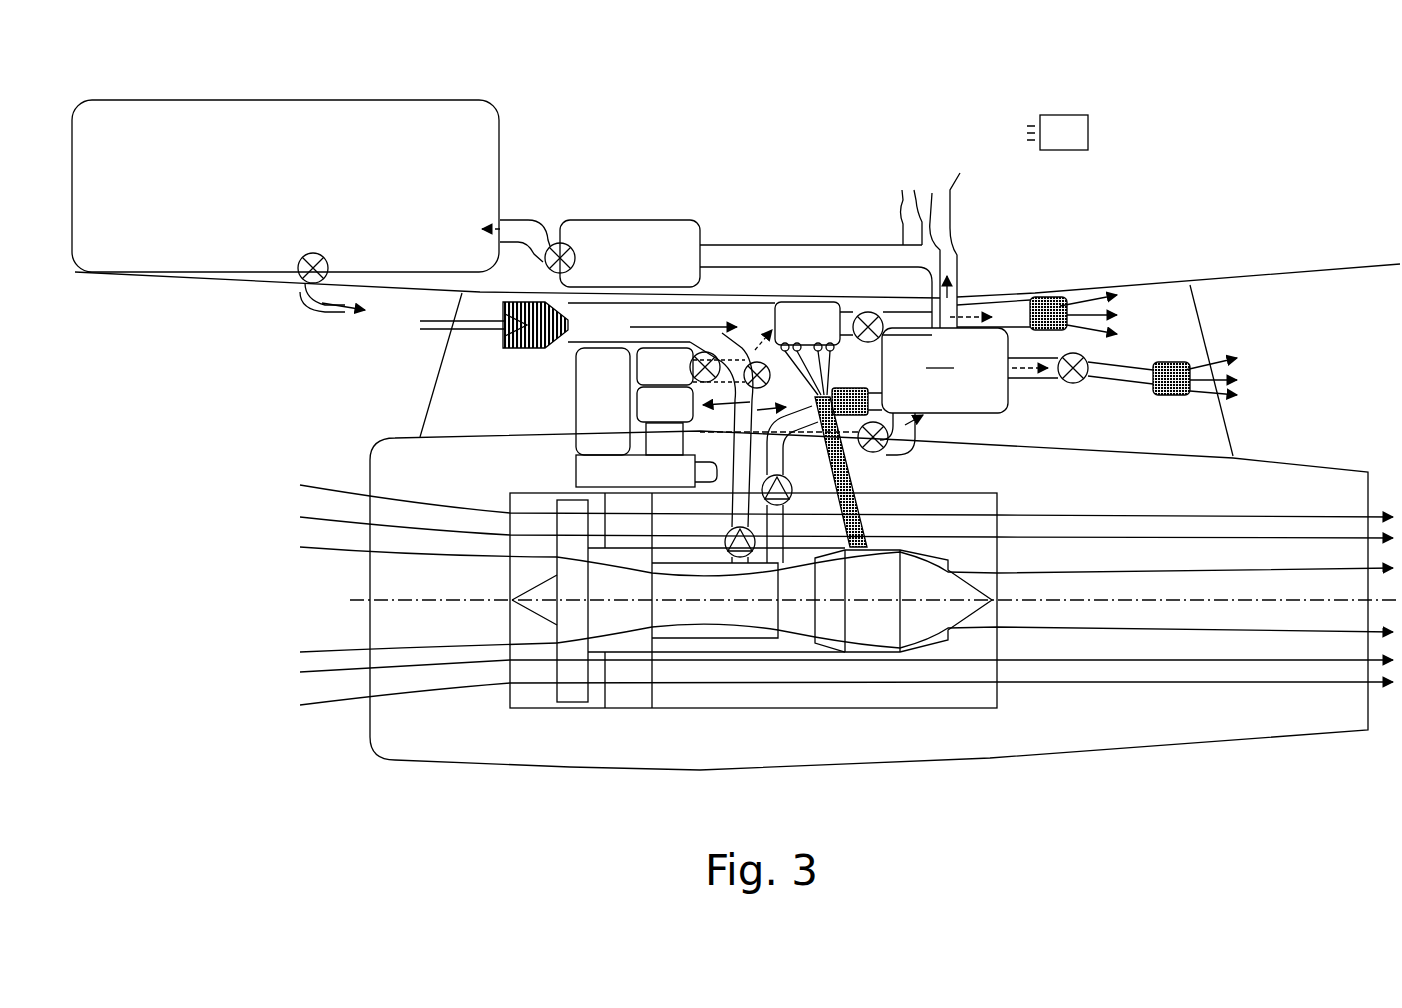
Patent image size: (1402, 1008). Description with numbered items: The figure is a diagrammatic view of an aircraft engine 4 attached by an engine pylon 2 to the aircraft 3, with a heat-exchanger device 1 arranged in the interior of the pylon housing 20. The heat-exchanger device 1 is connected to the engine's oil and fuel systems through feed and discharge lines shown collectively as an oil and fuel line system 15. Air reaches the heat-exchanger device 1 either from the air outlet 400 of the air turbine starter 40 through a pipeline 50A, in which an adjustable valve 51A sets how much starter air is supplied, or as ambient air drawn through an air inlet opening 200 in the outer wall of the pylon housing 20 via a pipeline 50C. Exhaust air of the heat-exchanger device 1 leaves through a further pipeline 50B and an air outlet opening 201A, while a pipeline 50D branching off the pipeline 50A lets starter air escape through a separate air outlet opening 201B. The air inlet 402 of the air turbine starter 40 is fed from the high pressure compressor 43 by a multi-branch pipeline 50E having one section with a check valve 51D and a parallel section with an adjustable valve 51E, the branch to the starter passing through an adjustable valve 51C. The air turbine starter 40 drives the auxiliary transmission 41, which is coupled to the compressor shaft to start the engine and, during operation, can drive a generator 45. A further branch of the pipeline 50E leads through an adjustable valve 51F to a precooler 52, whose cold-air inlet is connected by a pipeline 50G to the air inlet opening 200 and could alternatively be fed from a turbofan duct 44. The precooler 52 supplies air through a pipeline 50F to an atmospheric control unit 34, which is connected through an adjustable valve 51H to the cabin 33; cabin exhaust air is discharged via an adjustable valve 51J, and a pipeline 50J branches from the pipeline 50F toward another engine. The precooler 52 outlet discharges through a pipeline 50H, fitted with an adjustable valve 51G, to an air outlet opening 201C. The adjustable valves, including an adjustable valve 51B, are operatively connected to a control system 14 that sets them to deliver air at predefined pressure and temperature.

The heat-exchanger device 1 is at (808, 300).
The engine pylon 2 is at (1250, 398).
The aircraft 3 is at (1323, 299).
The aircraft engine 4 is at (1033, 770).
The control system 14 is at (1065, 123).
The oil and fuel line system 15 is at (850, 472).
The pylon housing 20 is at (1215, 430).
The cabin 33 is at (310, 108).
The atmospheric control unit 34 is at (628, 224).
The air turbine starter 40 is at (644, 440).
The auxiliary transmission 41 is at (600, 466).
The high pressure compressor 43 is at (700, 645).
The turbofan duct 44 is at (745, 690).
The generator 45 is at (652, 368).
The pipeline 50A is at (737, 413).
The further pipeline 50B is at (1003, 312).
The pipeline 50C is at (582, 320).
The pipeline 50D is at (790, 436).
The pipeline 50E is at (930, 420).
The pipeline 50F is at (892, 246).
The pipeline 50G is at (868, 380).
The pipeline 50H is at (1100, 376).
The pipeline 50J is at (942, 210).
The adjustable valve 51A is at (748, 362).
The adjustable valve 51B is at (868, 312).
The adjustable valve 51C is at (706, 350).
The check valve 51D is at (730, 538).
The adjustable valve 51E is at (785, 503).
The adjustable valve 51F is at (882, 452).
The adjustable valve 51G is at (1078, 384).
The adjustable valve 51H is at (555, 246).
The adjustable valve 51J is at (320, 256).
The precooler 52 is at (945, 370).
The air inlet opening 200 is at (503, 340).
The air outlet opening 201A is at (1040, 298).
The air outlet opening 201B is at (866, 448).
The air outlet opening 201C is at (1168, 360).
The air outlet 400 is at (645, 400).
The air inlet 402 is at (602, 357).